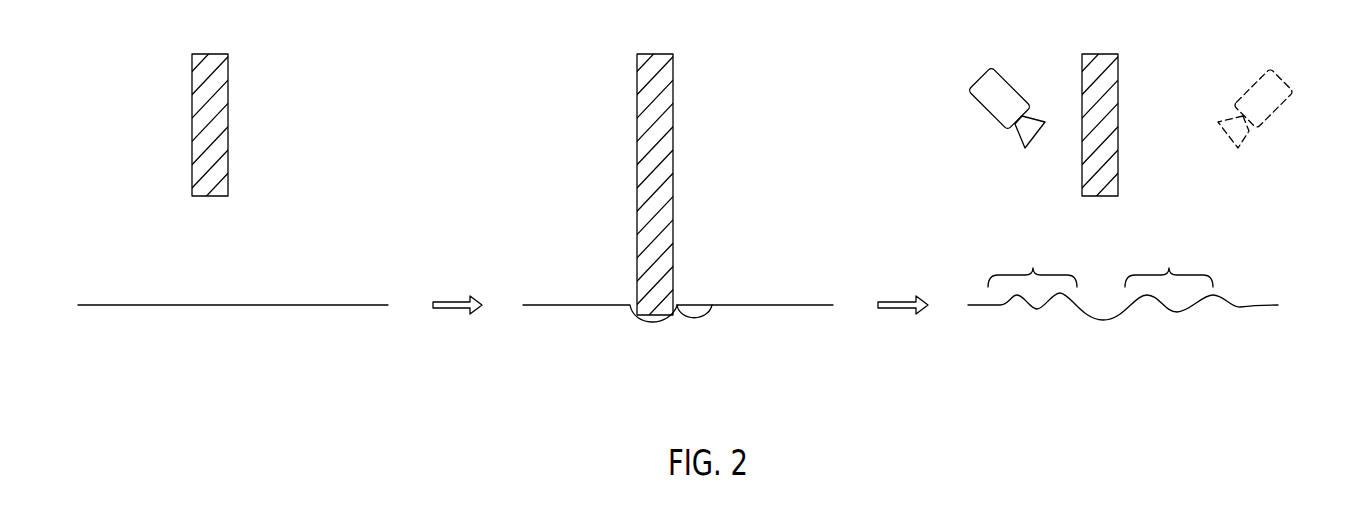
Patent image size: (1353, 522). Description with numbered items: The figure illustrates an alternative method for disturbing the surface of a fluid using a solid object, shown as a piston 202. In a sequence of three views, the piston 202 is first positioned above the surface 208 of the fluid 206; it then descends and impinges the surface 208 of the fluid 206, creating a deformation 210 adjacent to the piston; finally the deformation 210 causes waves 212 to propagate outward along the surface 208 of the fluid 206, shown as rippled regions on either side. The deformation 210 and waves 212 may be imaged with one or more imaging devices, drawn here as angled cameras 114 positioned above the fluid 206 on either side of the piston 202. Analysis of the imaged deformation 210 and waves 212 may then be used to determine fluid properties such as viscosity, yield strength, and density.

The camera / imaging device 114 is at (976, 102).
The piston 202 is at (228, 82).
The fluid 206 is at (270, 375).
The surface 208 is at (360, 305).
The deformation 210 is at (709, 305).
The waves 212 is at (1100, 262).